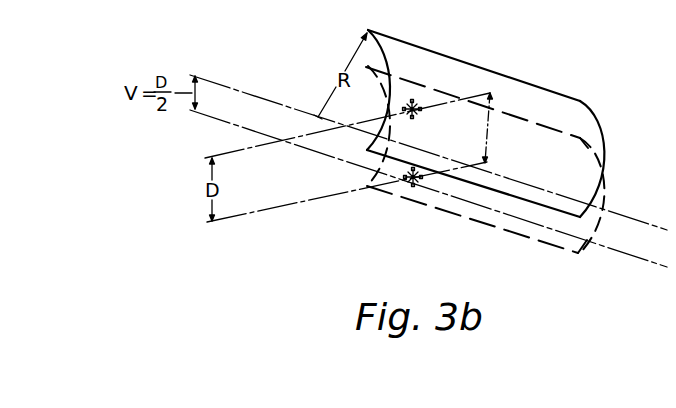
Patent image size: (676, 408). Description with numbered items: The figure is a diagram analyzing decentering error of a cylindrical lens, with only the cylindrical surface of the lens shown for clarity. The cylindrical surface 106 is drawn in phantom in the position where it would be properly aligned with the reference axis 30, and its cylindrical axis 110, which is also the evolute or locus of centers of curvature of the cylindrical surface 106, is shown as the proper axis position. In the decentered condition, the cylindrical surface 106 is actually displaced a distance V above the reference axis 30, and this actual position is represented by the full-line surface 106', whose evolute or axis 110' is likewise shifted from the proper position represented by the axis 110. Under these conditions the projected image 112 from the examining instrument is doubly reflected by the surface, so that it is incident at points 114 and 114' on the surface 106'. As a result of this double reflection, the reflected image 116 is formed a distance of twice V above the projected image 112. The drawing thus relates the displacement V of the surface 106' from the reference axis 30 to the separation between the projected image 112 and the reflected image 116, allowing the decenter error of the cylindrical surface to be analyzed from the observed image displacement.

The reference axis 30 is at (296, 205).
The cylindrical surface 106 is at (485, 172).
The displaced cylindrical surface 106' is at (485, 123).
The cylindrical axis 110 is at (428, 198).
The displaced cylindrical axis 110' is at (430, 152).
The projected image 112 is at (412, 195).
The first point of incidence 114 is at (502, 128).
The second point of incidence 114' is at (473, 102).
The reflected image 116 is at (423, 115).